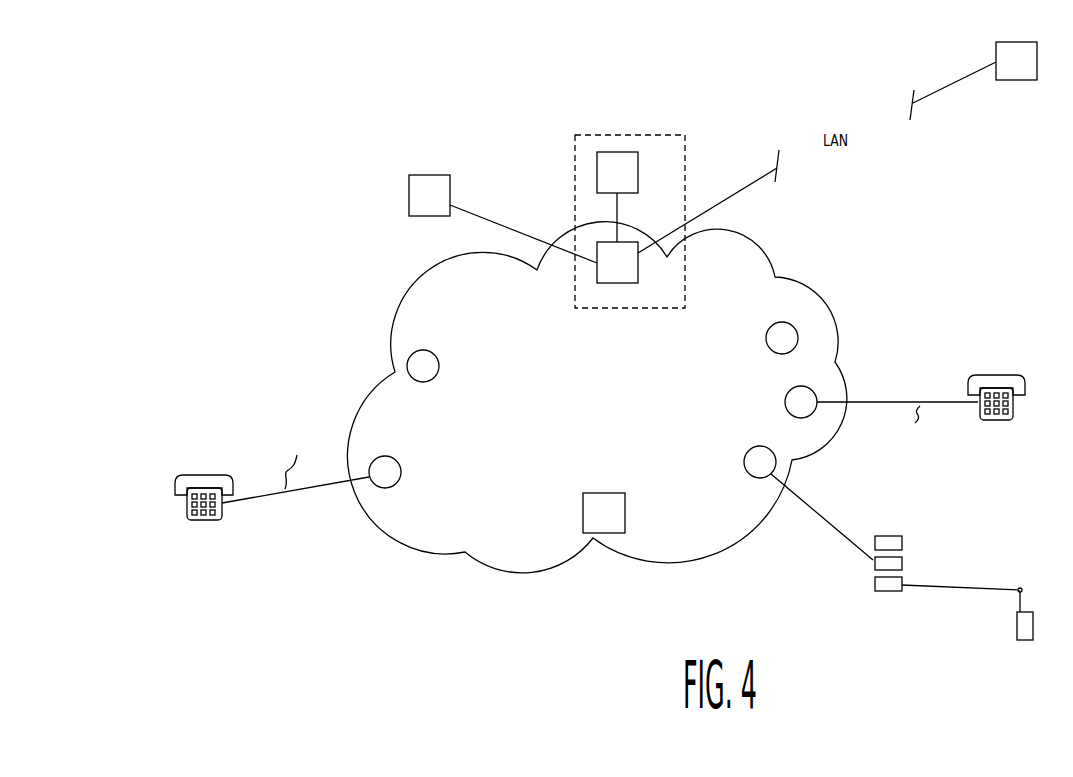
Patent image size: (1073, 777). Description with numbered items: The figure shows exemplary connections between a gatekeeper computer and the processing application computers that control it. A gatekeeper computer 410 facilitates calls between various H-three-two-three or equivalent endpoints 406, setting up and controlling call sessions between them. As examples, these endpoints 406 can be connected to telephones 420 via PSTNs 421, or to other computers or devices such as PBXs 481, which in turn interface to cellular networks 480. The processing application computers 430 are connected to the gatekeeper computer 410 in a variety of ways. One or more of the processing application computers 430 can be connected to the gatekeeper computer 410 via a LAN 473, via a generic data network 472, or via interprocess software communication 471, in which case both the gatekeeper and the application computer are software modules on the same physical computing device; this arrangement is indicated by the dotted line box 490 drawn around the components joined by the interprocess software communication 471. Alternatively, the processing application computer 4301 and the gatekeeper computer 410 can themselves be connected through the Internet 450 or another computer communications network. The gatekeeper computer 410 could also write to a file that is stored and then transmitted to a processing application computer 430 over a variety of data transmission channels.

The endpoint 406 is at (593, 411).
The gatekeeper computer 410 is at (617, 274).
The telephone 420 is at (610, 460).
The PSTN 421 is at (600, 448).
The processing application computer 430 is at (720, 129).
The processing application computer 4301 is at (625, 513).
The Internet 450 is at (597, 397).
The interprocess software communication 471 is at (619, 204).
The generic data network 472 is at (499, 224).
The LAN 473 is at (948, 88).
The cellular network 480 is at (981, 612).
The PBX 481 is at (858, 545).
The dotted line box 490 is at (619, 135).